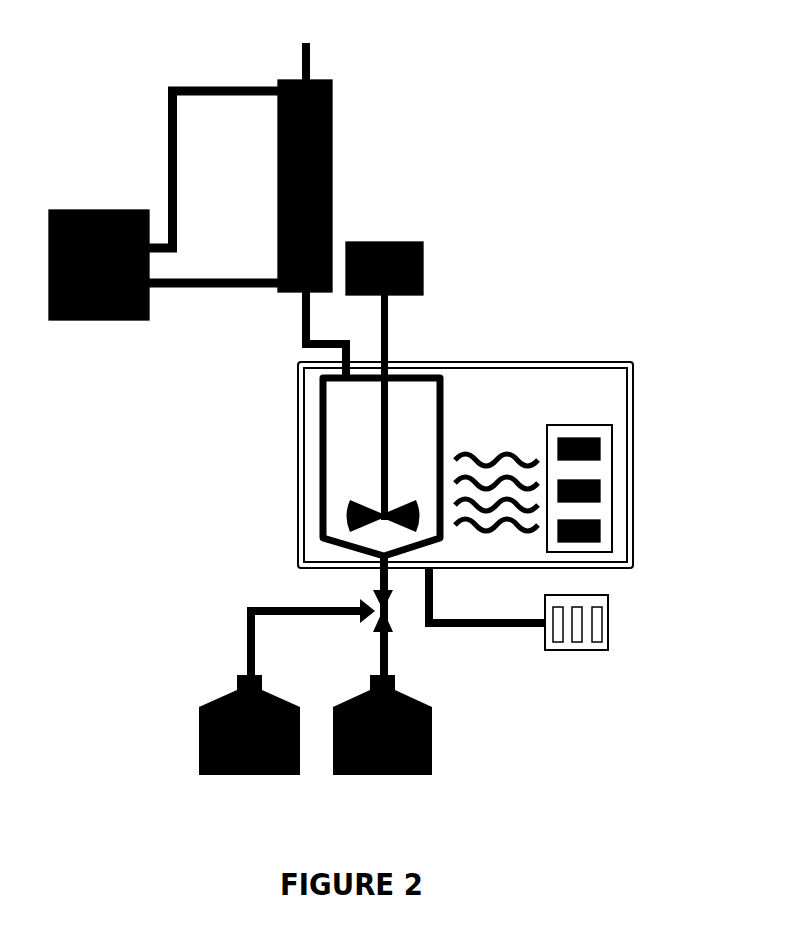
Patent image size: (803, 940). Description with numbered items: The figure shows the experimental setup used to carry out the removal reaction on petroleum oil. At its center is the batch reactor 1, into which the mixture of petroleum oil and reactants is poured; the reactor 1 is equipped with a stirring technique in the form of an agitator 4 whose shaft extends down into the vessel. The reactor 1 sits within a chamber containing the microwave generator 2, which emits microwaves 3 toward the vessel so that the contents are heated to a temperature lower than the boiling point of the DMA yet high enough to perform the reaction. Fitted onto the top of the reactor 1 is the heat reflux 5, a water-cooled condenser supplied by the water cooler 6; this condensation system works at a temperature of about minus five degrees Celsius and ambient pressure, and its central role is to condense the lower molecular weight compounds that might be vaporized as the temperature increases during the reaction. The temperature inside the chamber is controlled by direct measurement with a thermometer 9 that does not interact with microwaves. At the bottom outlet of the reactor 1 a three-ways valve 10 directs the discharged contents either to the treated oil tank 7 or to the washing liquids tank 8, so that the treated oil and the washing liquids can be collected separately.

The reactor 1 is at (415, 376).
The microwave generator 2 is at (477, 452).
The microwaves 3 is at (625, 395).
The agitator 4 is at (365, 242).
The heat reflux 5 is at (333, 205).
The water cooler 6 is at (67, 207).
The treated oil tank 7 is at (272, 693).
The washing liquids tank 8 is at (432, 727).
The thermometer 9 is at (605, 642).
The three-ways valve 10 is at (391, 622).